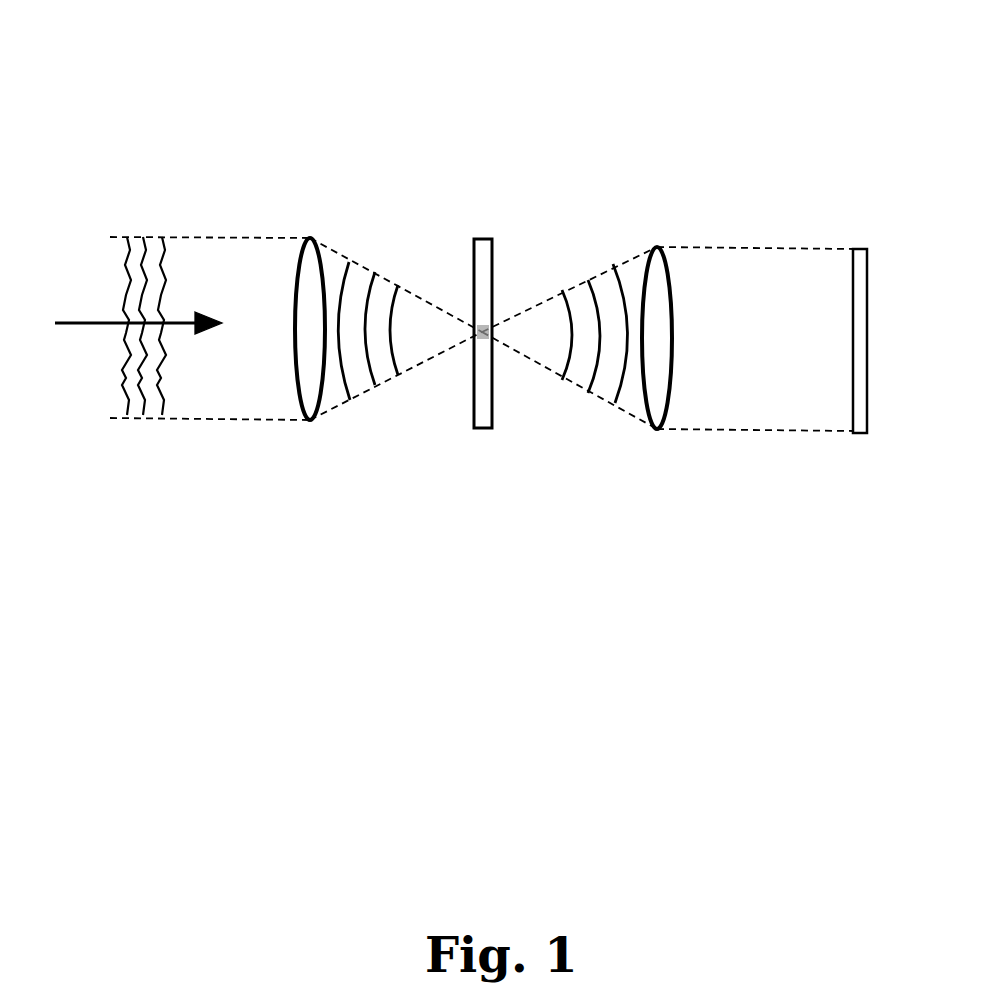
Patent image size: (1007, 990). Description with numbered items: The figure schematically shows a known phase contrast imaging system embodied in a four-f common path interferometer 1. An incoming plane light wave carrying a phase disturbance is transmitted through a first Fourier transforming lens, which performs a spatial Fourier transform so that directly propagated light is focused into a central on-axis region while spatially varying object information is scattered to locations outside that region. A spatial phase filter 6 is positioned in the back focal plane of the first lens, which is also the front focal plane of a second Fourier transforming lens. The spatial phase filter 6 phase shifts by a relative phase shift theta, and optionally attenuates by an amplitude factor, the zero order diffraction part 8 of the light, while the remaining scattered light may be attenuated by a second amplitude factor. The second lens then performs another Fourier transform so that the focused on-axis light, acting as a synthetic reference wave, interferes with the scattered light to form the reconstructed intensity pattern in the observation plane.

The 4f common path interferometer 1 is at (490, 180).
The spatial phase filter 6 is at (482, 420).
The zero order diffraction part 8 is at (387, 373).